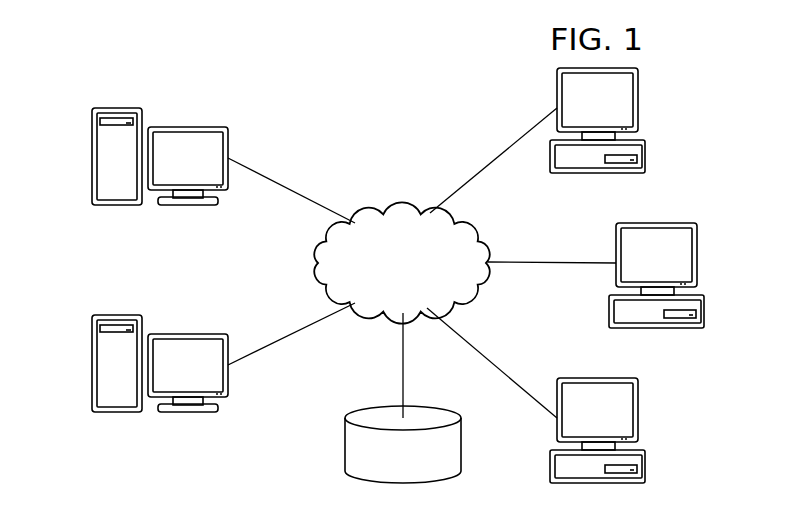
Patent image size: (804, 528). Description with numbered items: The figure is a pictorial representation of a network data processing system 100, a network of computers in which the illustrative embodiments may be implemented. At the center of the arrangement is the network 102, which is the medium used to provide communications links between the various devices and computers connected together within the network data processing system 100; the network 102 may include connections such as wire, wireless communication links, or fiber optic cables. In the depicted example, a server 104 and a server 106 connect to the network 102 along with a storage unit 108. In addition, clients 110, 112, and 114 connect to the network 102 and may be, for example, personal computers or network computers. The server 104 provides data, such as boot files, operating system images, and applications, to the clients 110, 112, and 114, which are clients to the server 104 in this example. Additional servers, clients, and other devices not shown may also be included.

The network data processing system 100 is at (288, 78).
The network 102 is at (400, 211).
The server 104 is at (92, 157).
The server 106 is at (92, 363).
The storage unit 108 is at (345, 448).
The client 110 is at (645, 157).
The client 112 is at (703, 310).
The client 114 is at (645, 465).